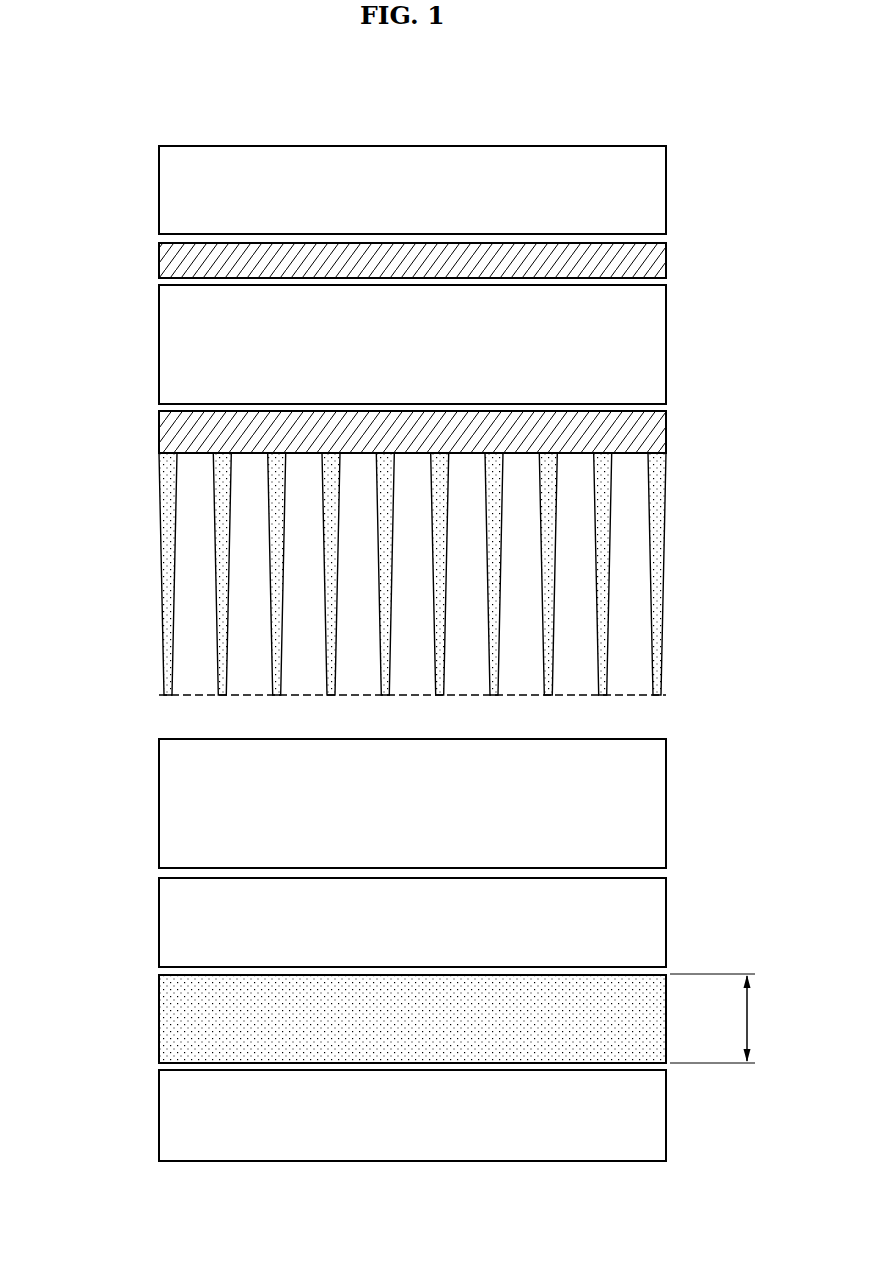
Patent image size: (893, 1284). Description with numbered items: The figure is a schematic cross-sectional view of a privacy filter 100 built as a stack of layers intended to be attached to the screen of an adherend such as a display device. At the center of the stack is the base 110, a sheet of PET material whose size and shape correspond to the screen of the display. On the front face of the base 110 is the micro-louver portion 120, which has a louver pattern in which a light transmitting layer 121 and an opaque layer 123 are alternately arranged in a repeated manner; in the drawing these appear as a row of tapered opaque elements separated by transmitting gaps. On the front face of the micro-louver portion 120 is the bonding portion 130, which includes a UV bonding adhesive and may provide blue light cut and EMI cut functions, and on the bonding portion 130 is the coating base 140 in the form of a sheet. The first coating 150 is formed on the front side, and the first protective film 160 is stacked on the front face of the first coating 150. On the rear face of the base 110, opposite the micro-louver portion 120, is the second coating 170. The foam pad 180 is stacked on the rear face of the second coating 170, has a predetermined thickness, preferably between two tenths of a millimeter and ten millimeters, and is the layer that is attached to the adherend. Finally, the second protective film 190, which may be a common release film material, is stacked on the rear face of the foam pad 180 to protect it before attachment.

The privacy filter 100 is at (146, 70).
The base 110 is at (172, 812).
The micro-louver portion 120 is at (77, 521).
The light transmitting layer 121 is at (190, 528).
The opaque layer 123 is at (168, 578).
The bonding portion 130 is at (173, 439).
The coating base 140 is at (172, 346).
The first coating 150 is at (172, 263).
The first protective film 160 is at (172, 190).
The second coating 170 is at (172, 929).
The foam pad 180 is at (172, 1019).
The second protective film 190 is at (172, 1119).